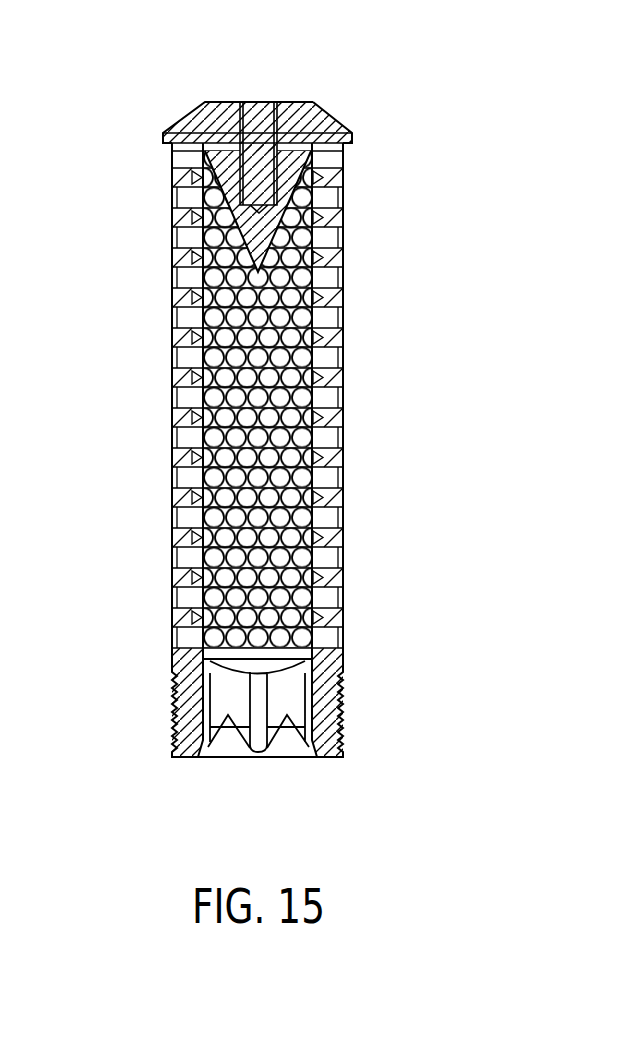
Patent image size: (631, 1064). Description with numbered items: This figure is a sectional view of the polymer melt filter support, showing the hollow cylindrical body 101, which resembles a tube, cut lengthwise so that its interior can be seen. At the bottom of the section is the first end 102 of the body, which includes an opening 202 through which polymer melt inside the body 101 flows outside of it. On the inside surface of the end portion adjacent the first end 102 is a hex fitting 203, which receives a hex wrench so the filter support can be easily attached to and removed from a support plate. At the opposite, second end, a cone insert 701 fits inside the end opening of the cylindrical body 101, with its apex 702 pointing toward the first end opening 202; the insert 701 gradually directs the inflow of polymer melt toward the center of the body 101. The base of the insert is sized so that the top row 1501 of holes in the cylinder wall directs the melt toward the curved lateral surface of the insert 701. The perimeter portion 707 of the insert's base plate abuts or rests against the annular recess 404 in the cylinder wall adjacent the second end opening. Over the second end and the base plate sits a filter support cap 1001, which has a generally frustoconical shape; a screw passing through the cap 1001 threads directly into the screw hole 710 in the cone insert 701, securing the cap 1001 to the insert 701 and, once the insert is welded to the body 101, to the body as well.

The hollow cylindrical body 101 is at (360, 461).
The first end 102 is at (224, 792).
The opening 202 is at (285, 747).
The hex fitting 203 is at (278, 700).
The annular recess 404 is at (172, 151).
The cone insert 701 is at (173, 176).
The apex 702 is at (258, 272).
The perimeter portion 707 is at (333, 119).
The screw hole 710 is at (258, 148).
The filter support cap 1001 is at (184, 118).
The top row of holes 1501 is at (327, 159).